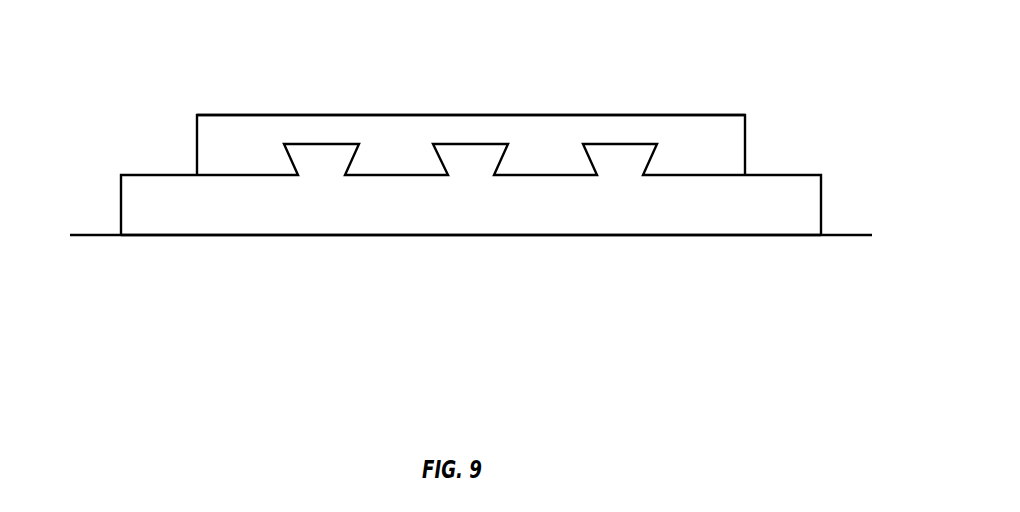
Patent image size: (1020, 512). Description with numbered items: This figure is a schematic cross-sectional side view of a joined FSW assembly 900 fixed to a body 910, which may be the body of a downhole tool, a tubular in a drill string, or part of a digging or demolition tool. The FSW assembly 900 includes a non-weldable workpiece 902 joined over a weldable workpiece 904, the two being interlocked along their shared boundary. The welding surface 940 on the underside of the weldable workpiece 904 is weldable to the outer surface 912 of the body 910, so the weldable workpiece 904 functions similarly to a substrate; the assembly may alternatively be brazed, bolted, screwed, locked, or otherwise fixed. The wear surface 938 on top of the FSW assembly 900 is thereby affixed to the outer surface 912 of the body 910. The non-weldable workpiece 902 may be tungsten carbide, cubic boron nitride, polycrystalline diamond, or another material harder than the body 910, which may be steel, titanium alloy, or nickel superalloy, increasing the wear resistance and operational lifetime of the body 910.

The FSW assembly 900 is at (774, 76).
The non-weldable workpiece 902 is at (197, 145).
The weldable workpiece 904 is at (121, 203).
The body 910 is at (765, 318).
The outer surface 912 is at (843, 235).
The wear surface 938 is at (562, 115).
The welding surface 940 is at (640, 235).